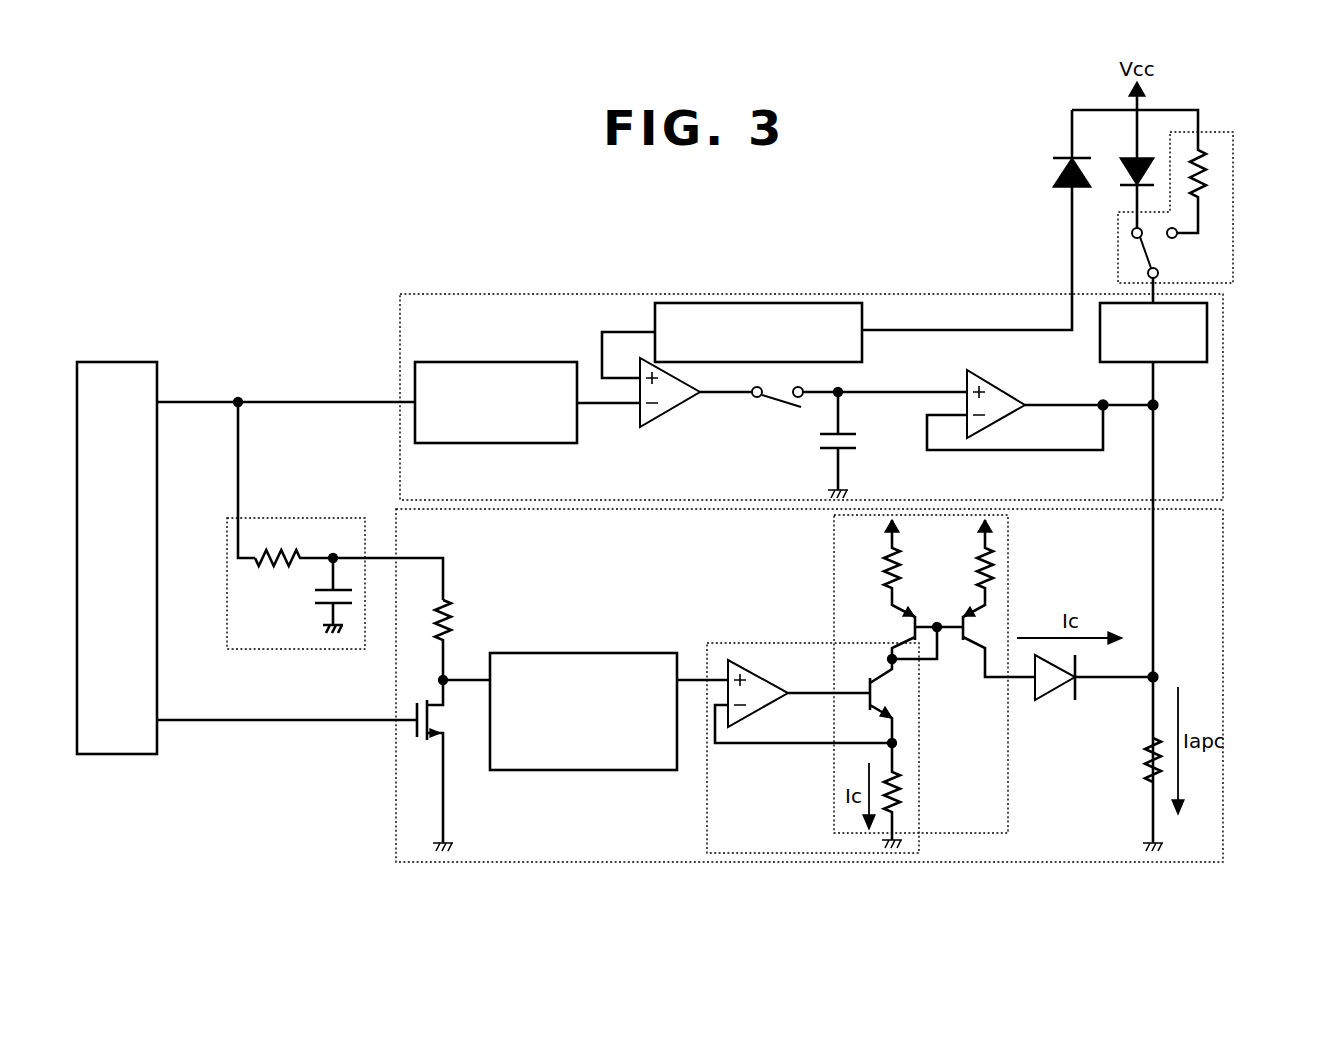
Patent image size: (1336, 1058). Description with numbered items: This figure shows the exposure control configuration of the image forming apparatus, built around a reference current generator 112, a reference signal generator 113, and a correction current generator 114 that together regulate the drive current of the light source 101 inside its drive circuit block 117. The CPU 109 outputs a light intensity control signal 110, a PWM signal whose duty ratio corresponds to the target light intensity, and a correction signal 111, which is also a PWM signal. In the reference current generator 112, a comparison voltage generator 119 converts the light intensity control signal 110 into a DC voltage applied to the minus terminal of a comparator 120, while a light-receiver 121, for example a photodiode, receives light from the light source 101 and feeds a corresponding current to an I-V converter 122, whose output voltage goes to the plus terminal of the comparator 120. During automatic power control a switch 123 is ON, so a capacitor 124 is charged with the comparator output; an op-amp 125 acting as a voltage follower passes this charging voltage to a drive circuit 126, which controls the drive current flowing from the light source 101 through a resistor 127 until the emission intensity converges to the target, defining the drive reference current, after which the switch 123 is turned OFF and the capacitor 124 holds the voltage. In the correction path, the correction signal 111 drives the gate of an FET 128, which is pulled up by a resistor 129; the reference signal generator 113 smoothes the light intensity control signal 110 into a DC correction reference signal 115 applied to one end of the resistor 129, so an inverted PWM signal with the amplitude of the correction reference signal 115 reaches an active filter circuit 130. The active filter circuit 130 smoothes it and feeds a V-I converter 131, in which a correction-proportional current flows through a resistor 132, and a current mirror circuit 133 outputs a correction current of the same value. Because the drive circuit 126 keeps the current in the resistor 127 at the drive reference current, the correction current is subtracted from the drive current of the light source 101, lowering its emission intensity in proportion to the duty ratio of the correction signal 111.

The light source 101 is at (1132, 158).
The CPU 109 is at (120, 362).
The light intensity control signal 110 is at (302, 401).
The correction signal 111 is at (312, 719).
The reference current generator 112 is at (1225, 452).
The reference signal generator 113 is at (322, 518).
The correction current generator 114 is at (1225, 585).
The correction reference signal 115 is at (378, 557).
The drive circuit 117 is at (1218, 130).
The comparison voltage generator 119 is at (523, 346).
The comparator 120 is at (638, 412).
The light-receiver 121 is at (1062, 158).
The I-V converter 122 is at (718, 303).
The switch 123 is at (768, 400).
The capacitor 124 is at (828, 449).
The op-amp 125 is at (963, 378).
The drive circuit 126 is at (1153, 564).
The resistor 127 is at (1140, 756).
The FET 128 is at (420, 742).
The resistor 129 is at (452, 612).
The active filter circuit 130 is at (578, 636).
The V-I converter 131 is at (776, 643).
The resistor 132 is at (905, 790).
The current mirror circuit 133 is at (834, 568).